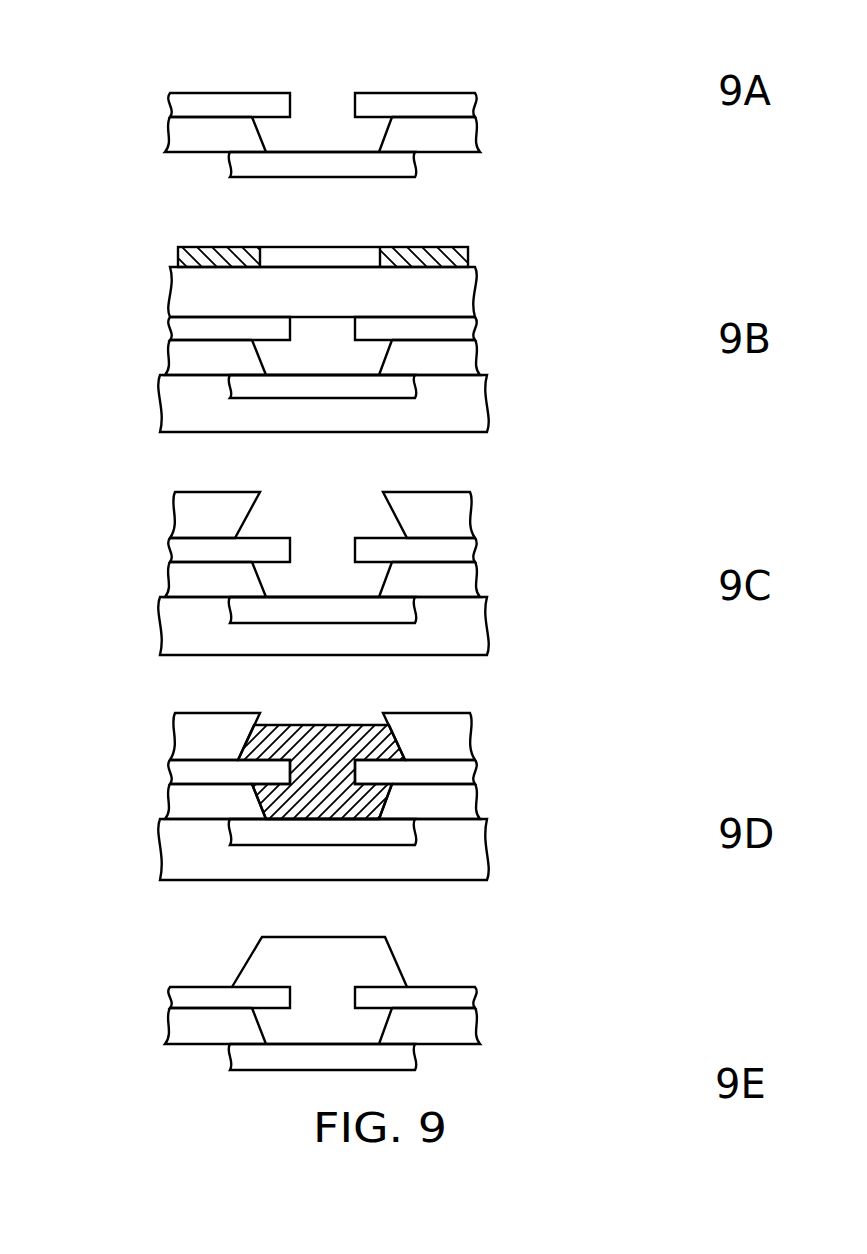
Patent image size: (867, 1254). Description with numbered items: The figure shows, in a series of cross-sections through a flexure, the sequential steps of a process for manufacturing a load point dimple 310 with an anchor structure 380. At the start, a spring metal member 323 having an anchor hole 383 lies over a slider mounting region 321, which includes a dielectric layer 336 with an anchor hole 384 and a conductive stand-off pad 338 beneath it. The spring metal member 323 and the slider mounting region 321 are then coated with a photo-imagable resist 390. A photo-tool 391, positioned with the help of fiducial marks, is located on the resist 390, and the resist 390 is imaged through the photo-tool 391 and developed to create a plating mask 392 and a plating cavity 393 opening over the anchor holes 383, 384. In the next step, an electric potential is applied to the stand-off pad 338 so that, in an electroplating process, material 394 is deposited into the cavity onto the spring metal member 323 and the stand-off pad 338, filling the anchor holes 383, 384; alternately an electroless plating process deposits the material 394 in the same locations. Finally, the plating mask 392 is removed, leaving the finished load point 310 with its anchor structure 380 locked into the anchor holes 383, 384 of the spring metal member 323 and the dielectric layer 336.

The load point dimple 310 is at (397, 960).
The slider mounting region 321 is at (327, 131).
The spring metal member 323 is at (470, 72).
The dielectric layer 336 is at (264, 131).
The conductive stand-off pad 338 is at (227, 165).
The anchor structure 380 is at (387, 1022).
The anchor hole 383 is at (353, 108).
The anchor hole 384 is at (263, 137).
The photo-imagable resist 390 is at (432, 292).
The photo-tool 391 is at (423, 248).
The plating mask 392 is at (218, 490).
The plating cavity 393 is at (317, 530).
The material 394 is at (323, 727).